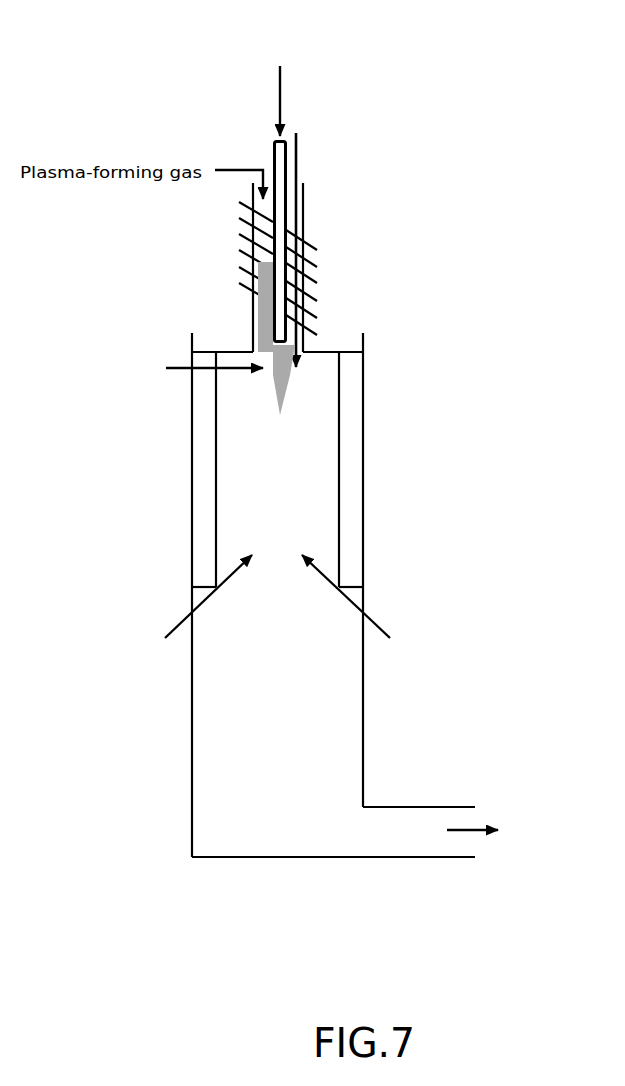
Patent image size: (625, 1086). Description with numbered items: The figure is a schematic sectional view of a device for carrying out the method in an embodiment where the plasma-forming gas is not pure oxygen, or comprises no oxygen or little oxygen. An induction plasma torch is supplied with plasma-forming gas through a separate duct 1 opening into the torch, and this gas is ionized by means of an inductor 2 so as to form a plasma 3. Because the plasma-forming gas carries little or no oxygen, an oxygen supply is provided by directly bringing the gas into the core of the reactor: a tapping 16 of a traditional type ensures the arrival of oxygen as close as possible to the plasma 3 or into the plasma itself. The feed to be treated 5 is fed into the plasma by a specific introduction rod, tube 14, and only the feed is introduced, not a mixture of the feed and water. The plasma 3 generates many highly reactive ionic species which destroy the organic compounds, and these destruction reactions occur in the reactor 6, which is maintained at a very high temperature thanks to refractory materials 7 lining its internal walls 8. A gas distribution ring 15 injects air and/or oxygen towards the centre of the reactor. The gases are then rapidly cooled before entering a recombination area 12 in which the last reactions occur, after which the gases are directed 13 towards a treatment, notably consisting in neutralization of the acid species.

The duct 1 is at (308, 217).
The inductor 2 is at (217, 247).
The plasma 3 is at (206, 369).
The feed to be treated 5 is at (283, 87).
The reactor 6 is at (276, 384).
The refractory materials 7 is at (355, 490).
The internal walls 8 is at (365, 370).
The recombination area 12 is at (333, 604).
The gas outlet direction 13 is at (497, 847).
The introduction rod, tube 14 is at (266, 148).
The gas distribution ring for injecting air and/or oxygen 15 is at (281, 609).
The tapping 16 is at (344, 236).